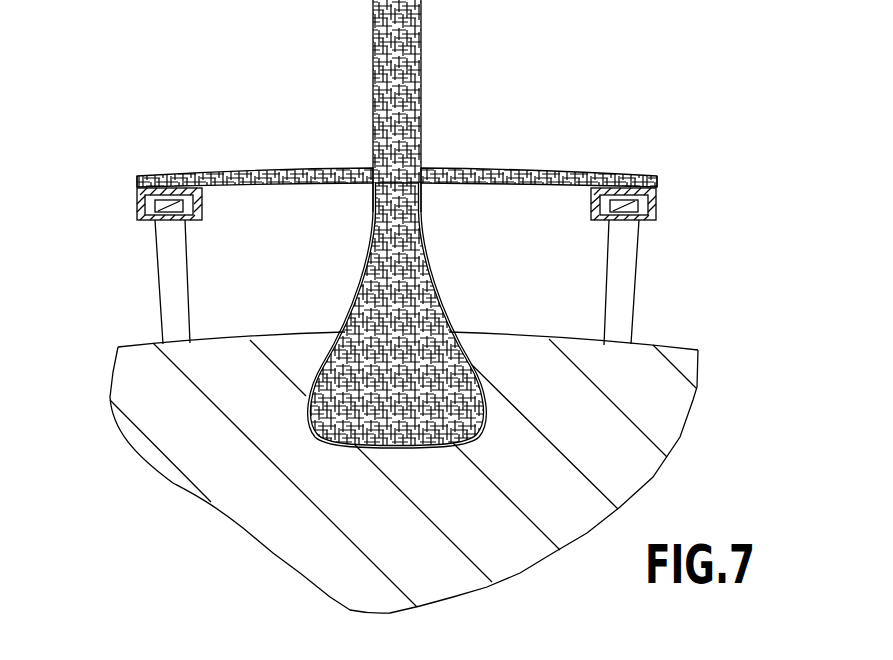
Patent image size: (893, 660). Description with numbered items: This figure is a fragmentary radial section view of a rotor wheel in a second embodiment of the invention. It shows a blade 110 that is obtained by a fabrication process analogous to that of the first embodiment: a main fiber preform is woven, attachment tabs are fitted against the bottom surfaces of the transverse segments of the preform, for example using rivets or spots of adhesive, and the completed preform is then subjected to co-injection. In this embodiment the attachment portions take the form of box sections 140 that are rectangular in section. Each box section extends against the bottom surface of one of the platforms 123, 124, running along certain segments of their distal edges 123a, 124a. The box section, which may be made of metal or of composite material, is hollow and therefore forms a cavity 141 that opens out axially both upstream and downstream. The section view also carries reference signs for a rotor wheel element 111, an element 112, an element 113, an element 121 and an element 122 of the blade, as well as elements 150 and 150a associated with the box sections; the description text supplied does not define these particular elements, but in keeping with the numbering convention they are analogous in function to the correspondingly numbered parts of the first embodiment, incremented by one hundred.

The blade 110 is at (563, 60).
The rotor disk / root block 111 is at (408, 539).
The slot 112 is at (333, 445).
The disk surface 113 is at (260, 330).
The blade root 121 is at (415, 347).
The blade stem / airfoil 122 is at (404, 60).
The platform 123 is at (520, 177).
The distal edge 123a is at (650, 177).
The platform 124 is at (277, 175).
The distal edge 124a is at (140, 176).
The box section 140 is at (398, 224).
The cavity 141 is at (197, 202).
The support leg 150 is at (152, 270).
The support head 150a is at (140, 203).